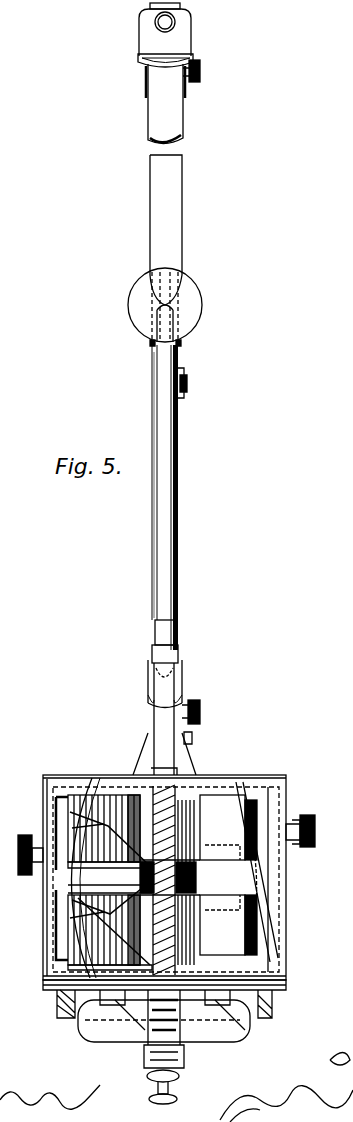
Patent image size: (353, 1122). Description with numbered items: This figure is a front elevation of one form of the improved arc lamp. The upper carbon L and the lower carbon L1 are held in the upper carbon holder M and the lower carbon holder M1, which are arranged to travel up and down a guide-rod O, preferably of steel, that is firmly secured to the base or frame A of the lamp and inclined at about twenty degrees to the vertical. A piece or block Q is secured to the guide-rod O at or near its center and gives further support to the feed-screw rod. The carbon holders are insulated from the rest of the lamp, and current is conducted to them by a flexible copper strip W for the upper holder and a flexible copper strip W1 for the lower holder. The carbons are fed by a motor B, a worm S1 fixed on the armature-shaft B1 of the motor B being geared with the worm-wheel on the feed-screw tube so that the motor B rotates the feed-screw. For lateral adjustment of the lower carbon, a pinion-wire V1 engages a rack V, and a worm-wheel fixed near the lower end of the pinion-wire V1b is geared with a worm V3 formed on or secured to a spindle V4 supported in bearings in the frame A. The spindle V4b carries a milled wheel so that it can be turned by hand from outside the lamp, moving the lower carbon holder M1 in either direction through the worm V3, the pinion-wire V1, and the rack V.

The carbon holder M is at (169, 73).
The carbon L is at (166, 230).
The piece or block Q is at (165, 307).
The guide-rod O is at (179, 447).
The pinion-wire V1 is at (179, 503).
The carbon L1 is at (158, 550).
The flexible copper strip W1 is at (178, 632).
The carbon holder M1 is at (181, 672).
The flexible copper strip W is at (166, 717).
The base or frame A is at (154, 870).
The spindle V4 is at (166, 855).
The motor B is at (228, 873).
The armature-shaft B1 is at (104, 880).
The worm S1 is at (110, 891).
The rack V is at (95, 1022).
The pinion-wire V1b is at (148, 1052).
The worm V3 is at (185, 1035).
The spindle V4b is at (170, 1088).